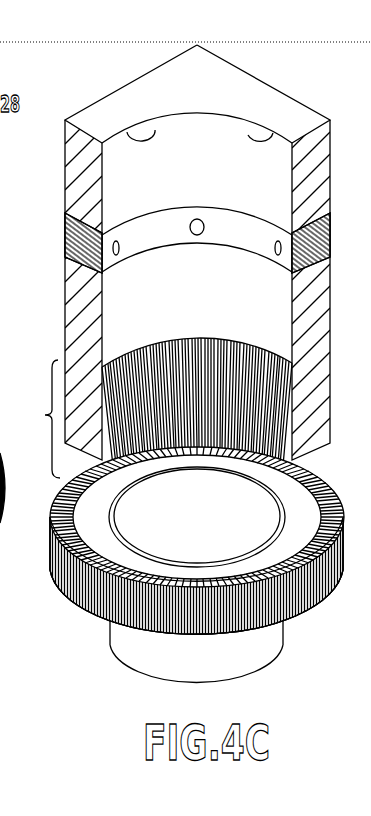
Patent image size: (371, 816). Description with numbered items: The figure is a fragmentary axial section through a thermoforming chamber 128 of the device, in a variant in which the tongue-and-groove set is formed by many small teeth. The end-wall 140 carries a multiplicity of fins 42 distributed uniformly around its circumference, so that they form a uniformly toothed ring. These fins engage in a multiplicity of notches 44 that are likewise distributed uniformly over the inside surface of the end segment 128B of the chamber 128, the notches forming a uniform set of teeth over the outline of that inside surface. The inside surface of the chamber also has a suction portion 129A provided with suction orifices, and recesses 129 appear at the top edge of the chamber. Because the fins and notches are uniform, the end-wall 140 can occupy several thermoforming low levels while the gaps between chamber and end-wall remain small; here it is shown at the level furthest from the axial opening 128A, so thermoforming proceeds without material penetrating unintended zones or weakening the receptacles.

The thermoforming chamber 128 is at (275, 133).
The axial opening 128A is at (213, 113).
The end segment 128B is at (30, 419).
The notch 129 is at (127, 131).
The suction portion 129A is at (163, 226).
The notches 44 is at (178, 340).
The fins 42 is at (311, 598).
The end-wall 140 is at (210, 524).